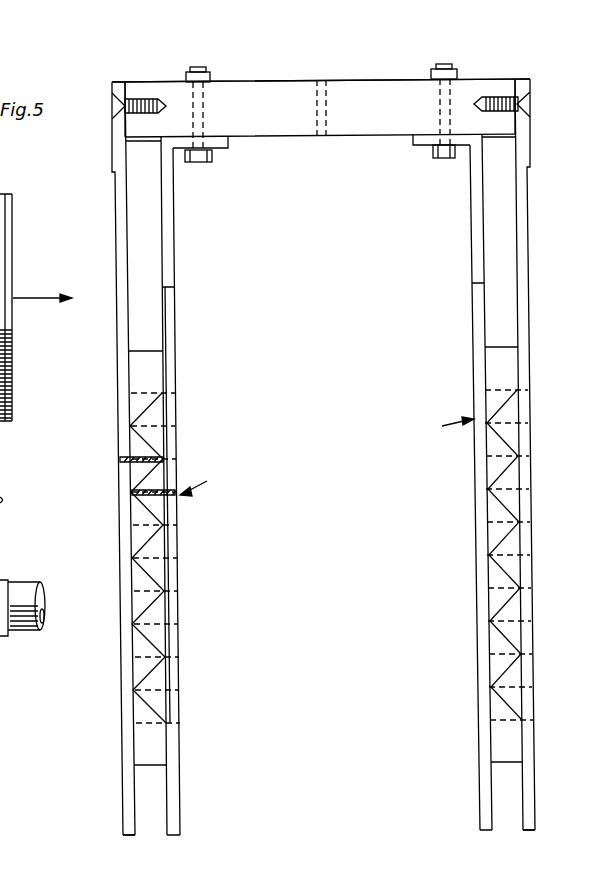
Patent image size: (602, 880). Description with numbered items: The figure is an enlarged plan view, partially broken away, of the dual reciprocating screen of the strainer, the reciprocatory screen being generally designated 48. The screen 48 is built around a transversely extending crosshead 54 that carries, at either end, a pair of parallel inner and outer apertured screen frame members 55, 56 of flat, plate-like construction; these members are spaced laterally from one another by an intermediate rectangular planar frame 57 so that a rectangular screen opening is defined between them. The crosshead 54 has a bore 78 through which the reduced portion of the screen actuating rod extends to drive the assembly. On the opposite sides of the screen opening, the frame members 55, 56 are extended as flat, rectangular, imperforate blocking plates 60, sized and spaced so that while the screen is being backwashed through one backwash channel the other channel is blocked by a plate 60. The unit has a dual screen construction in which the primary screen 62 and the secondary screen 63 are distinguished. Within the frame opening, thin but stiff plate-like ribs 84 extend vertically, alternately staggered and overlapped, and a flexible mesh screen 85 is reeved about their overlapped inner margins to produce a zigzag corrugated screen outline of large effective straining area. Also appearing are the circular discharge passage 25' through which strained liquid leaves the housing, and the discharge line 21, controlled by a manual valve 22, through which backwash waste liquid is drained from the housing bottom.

The discharge line 21 is at (19, 622).
The manual valve 22 is at (11, 527).
The circular discharge passage 25' is at (36, 307).
The reciprocatory screen 48 is at (384, 157).
The crosshead 54 is at (273, 130).
The inner screen frame member 55 is at (167, 247).
The outer screen frame member 56 is at (113, 205).
The intermediate rectangular planar frame 57 is at (155, 375).
The blocking plate 60 is at (165, 322).
The primary screen 62 is at (444, 424).
The secondary screen 63 is at (207, 481).
The bore 78 is at (320, 139).
The plate-like rib 84 is at (136, 433).
The flexible mesh screen 85 is at (170, 560).